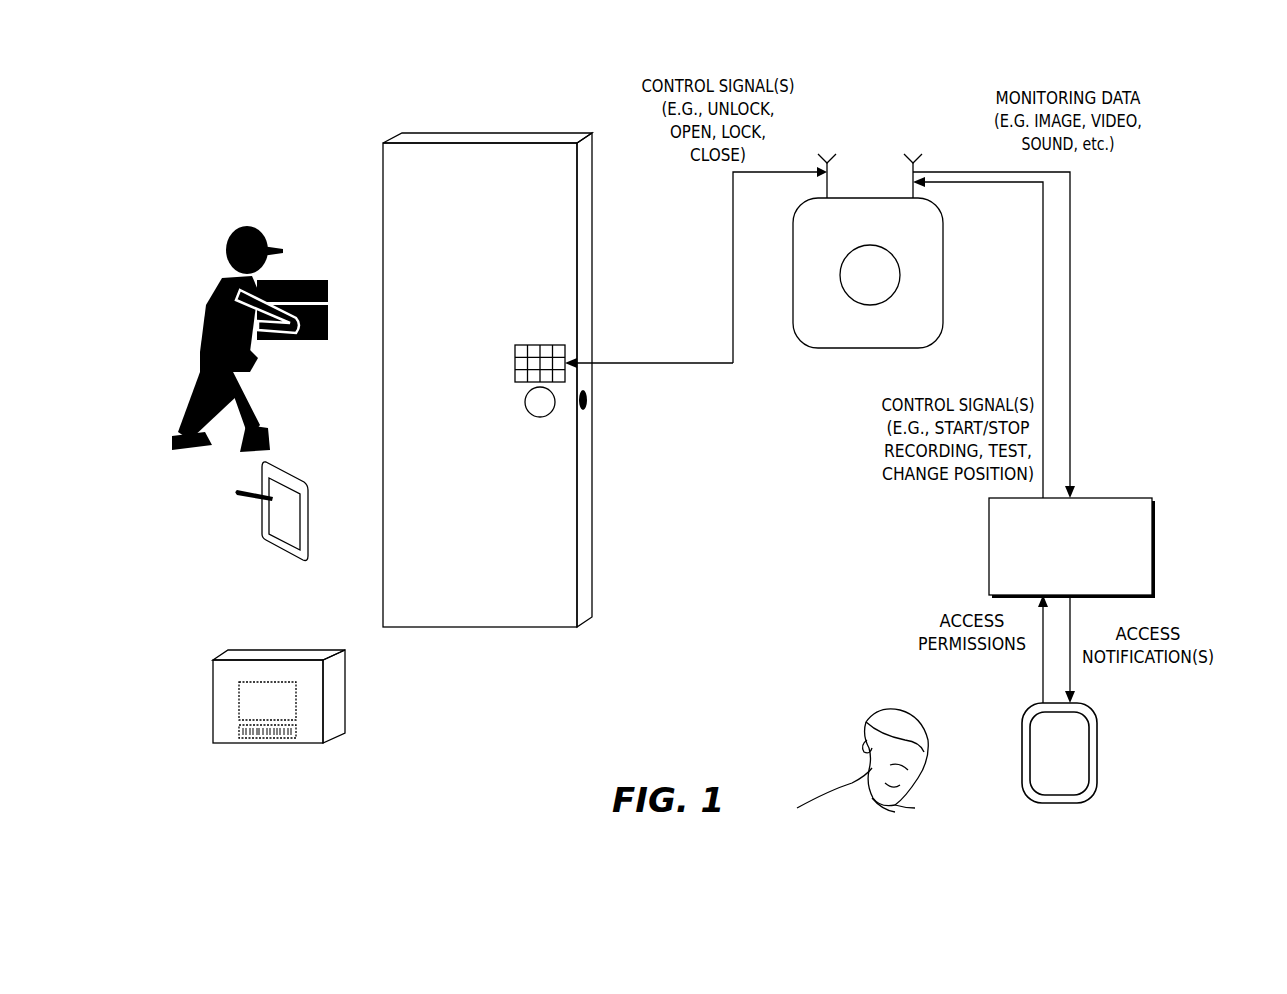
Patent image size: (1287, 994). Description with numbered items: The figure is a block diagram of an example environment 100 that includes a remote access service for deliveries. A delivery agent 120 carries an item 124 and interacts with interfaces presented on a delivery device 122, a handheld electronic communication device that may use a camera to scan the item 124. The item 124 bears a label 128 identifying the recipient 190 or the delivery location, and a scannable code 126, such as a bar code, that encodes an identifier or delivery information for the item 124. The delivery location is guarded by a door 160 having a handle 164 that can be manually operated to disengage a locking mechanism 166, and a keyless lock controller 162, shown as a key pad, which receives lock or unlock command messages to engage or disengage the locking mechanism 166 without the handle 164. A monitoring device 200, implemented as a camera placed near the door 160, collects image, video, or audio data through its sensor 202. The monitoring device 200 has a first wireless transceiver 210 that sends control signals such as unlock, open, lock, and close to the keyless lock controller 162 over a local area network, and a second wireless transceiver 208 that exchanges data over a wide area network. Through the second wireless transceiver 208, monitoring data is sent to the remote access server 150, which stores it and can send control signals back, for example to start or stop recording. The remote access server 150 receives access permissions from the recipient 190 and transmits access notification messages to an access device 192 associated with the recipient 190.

The environment 100 is at (207, 118).
The delivery agent 120 is at (255, 209).
The delivery device 122 is at (290, 470).
The item 124 is at (287, 660).
The scannable code 126 is at (262, 744).
The label 128 is at (238, 700).
The door 160 is at (553, 133).
The keyless lock controller 162 is at (515, 347).
The handle 164 is at (524, 400).
The locking mechanism 166 is at (584, 412).
The monitoring device 200 is at (943, 236).
The sensor 202 is at (868, 246).
The second wireless transceiver 208 is at (910, 190).
The first wireless transceiver 210 is at (832, 168).
The remote access server 150 is at (1072, 548).
The recipient 190 is at (906, 694).
The access device 192 is at (1077, 705).